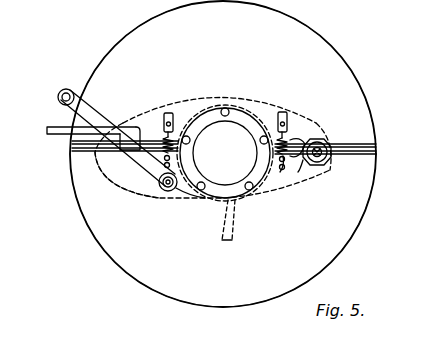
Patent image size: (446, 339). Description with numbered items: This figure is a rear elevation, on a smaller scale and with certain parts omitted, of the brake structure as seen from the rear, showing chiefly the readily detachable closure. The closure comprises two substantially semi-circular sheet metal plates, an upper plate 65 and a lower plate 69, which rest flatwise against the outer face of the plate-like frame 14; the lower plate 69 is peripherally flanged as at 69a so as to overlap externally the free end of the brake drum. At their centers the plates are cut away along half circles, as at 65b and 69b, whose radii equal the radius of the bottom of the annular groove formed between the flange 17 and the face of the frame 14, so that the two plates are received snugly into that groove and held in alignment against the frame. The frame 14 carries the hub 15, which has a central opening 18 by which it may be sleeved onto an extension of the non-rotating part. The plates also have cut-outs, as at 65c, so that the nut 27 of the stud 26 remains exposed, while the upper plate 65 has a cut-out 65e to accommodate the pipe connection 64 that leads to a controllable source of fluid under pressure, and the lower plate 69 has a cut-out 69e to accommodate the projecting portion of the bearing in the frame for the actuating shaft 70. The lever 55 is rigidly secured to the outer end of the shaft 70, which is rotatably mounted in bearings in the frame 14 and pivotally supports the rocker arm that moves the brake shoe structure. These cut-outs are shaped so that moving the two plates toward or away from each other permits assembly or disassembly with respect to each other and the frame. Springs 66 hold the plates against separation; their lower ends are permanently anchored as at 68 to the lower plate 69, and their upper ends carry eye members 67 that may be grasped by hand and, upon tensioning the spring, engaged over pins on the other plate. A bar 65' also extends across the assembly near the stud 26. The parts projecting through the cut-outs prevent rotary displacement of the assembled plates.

The frame 14 is at (183, 107).
The hub 15 is at (244, 224).
The flange 17 is at (212, 224).
The central opening 18 is at (247, 136).
The stud 26 is at (331, 142).
The nut 27 is at (312, 172).
The lever 55 is at (97, 112).
The pipe connection 64 is at (53, 125).
The upper plate 65 is at (223, 154).
The bar 65' is at (344, 136).
The cut-away 65b is at (212, 105).
The cut-out 65c is at (304, 140).
The cut-out 65e is at (121, 172).
The springs 66 is at (163, 143).
The eye members 67 is at (167, 112).
The anchor 68 is at (284, 170).
The lower plate 69 is at (331, 262).
The peripheral flange 69a is at (322, 166).
The cut-away 69b is at (218, 255).
The cut-out 69e is at (215, 198).
The shaft 70 is at (166, 192).